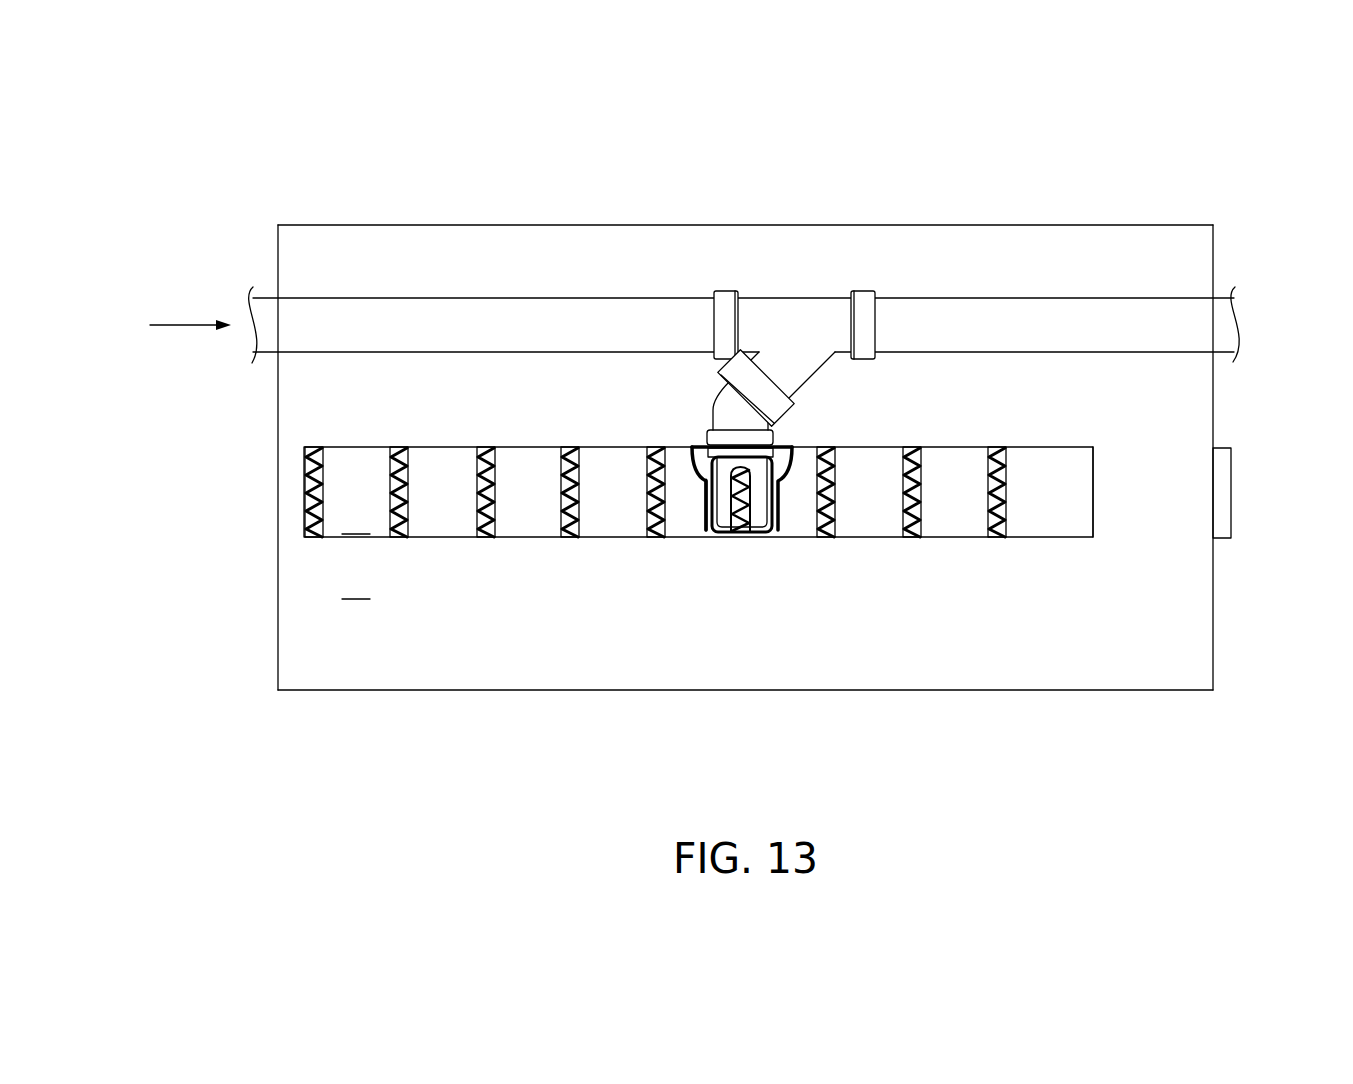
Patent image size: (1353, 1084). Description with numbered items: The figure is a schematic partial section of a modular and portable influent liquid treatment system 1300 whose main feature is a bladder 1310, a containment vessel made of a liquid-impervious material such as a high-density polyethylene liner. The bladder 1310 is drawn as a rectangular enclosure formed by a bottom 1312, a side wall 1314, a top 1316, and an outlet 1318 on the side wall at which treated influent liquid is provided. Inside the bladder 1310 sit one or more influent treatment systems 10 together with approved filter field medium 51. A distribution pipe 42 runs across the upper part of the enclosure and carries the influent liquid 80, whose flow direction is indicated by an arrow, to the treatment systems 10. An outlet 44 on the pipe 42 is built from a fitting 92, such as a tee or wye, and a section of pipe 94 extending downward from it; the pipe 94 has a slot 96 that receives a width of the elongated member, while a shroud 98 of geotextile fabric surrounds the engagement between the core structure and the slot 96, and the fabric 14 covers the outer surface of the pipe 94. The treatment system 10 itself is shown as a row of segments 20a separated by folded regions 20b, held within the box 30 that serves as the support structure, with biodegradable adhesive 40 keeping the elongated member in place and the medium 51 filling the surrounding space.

The modular and portable influent liquid treatment system 1300 is at (270, 752).
The bladder 1310 is at (268, 548).
The bottom 1312 is at (362, 690).
The side wall 1314 is at (1213, 610).
The top 1316 is at (913, 225).
The outlet 1318 is at (1233, 490).
The influent liquid 80 is at (190, 323).
The distribution pipe 42 is at (1105, 297).
The outlet 44 is at (763, 294).
The fitting 92 is at (712, 295).
The section of pipe 94 is at (795, 460).
The influent treatment system 10 is at (1110, 449).
The segment 20a is at (693, 493).
The fold 20b is at (685, 537).
The biodegradable adhesive 40 is at (525, 520).
The filter field medium 51 is at (356, 553).
The box 30 is at (1093, 492).
The fabric 14 is at (741, 522).
The slot 96 is at (748, 500).
The shroud 98 is at (698, 466).